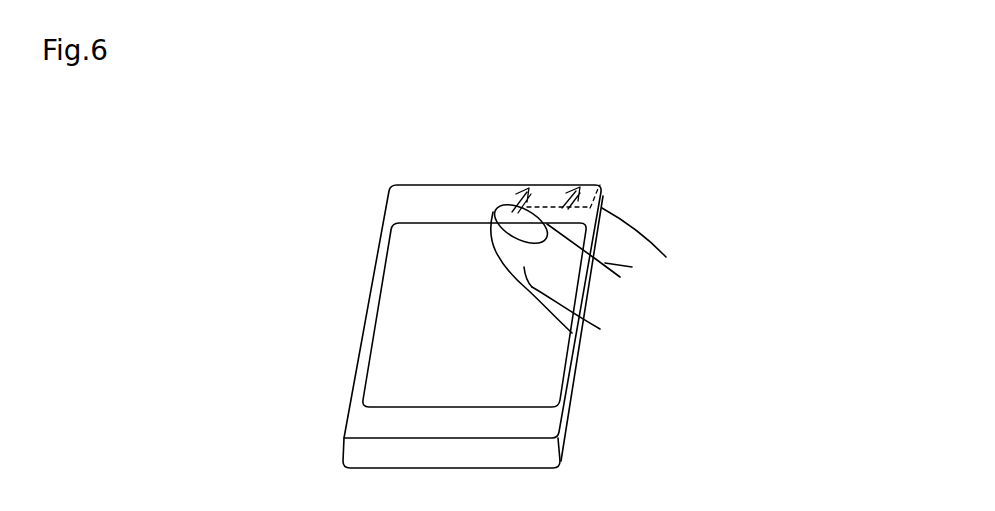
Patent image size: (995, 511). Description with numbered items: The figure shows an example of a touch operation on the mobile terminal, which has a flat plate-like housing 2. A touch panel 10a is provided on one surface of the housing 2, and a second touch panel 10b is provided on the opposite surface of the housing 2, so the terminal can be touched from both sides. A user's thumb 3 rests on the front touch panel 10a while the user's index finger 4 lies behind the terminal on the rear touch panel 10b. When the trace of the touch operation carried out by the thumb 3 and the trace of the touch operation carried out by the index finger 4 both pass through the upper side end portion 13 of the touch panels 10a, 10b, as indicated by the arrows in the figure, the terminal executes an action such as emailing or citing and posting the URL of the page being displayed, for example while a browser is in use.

The housing 2 is at (394, 208).
The touch panel 10a is at (381, 358).
The touch panel 10b is at (543, 388).
The end portion 13 is at (473, 220).
The index finger 4 is at (603, 185).
The thumb 3 is at (600, 329).